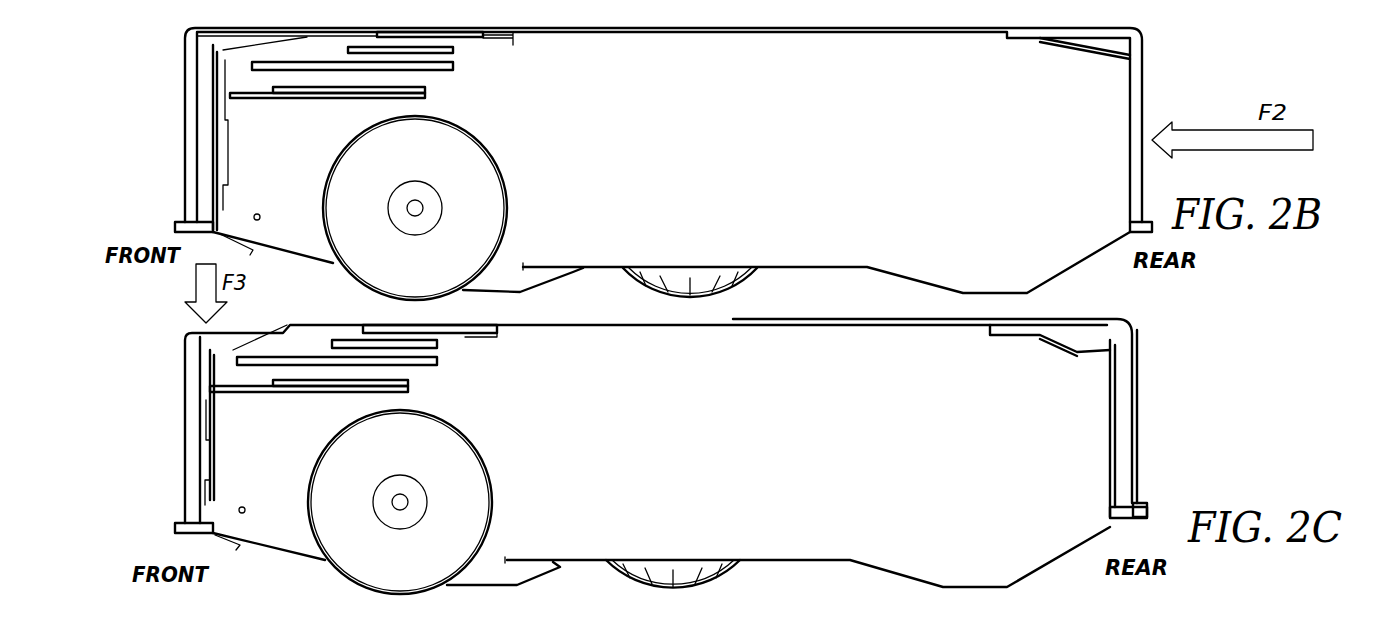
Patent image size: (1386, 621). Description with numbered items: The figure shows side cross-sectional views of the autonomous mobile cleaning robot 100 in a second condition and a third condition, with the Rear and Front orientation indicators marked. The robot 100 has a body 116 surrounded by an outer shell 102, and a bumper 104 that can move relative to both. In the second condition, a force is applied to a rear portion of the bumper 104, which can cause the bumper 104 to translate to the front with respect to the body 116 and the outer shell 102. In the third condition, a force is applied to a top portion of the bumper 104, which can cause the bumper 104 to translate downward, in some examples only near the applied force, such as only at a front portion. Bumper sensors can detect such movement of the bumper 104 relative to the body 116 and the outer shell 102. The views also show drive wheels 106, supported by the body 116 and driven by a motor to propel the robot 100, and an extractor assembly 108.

In FIG. 2B, the autonomous mobile cleaning robot 100 is at (1157, 32).
In FIG. 2C, the autonomous mobile cleaning robot 100 is at (1158, 325).
In FIG. 2B, the outer shell 102 is at (213, 55).
In FIG. 2C, the outer shell 102 is at (200, 355).
In FIG. 2B, the bumper 104 is at (188, 110).
In FIG. 2C, the bumper 104 is at (188, 415).
In FIG. 2B, the drive wheels 106 is at (640, 278).
In FIG. 2C, the drive wheels 106 is at (625, 570).
In FIG. 2B, the extractor assembly 108 is at (385, 275).
In FIG. 2C, the extractor assembly 108 is at (357, 567).
In FIG. 2B, the body 116 is at (763, 68).
In FIG. 2C, the body 116 is at (728, 362).